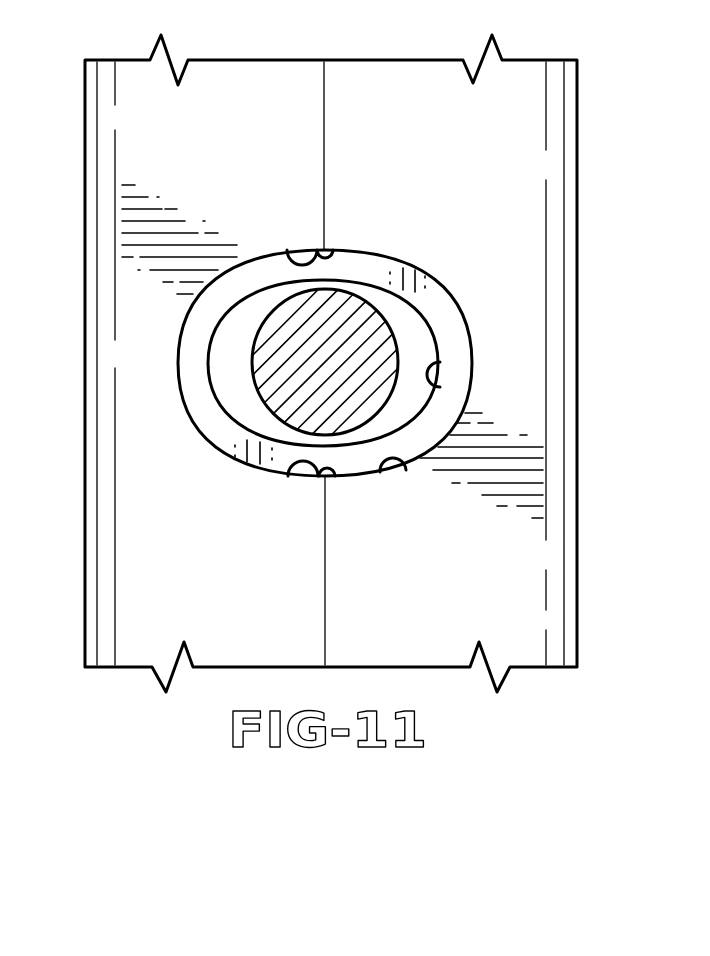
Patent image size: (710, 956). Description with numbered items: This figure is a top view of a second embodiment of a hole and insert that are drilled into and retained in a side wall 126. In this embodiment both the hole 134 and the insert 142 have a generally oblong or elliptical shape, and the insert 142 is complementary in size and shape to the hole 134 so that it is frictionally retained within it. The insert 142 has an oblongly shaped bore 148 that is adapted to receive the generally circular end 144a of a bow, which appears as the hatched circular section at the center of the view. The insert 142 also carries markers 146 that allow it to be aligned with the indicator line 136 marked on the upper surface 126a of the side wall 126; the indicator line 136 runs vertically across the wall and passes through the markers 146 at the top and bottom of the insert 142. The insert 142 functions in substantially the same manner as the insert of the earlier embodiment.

The side wall 126 is at (497, 242).
The upper surface 126a is at (517, 562).
The hole 134 is at (379, 474).
The indicator line 136 is at (324, 152).
The insert 142 is at (458, 332).
The generally circular end of a bow 144a is at (262, 377).
The markers 146 is at (286, 250).
The oblongly shaped bore 148 is at (432, 389).